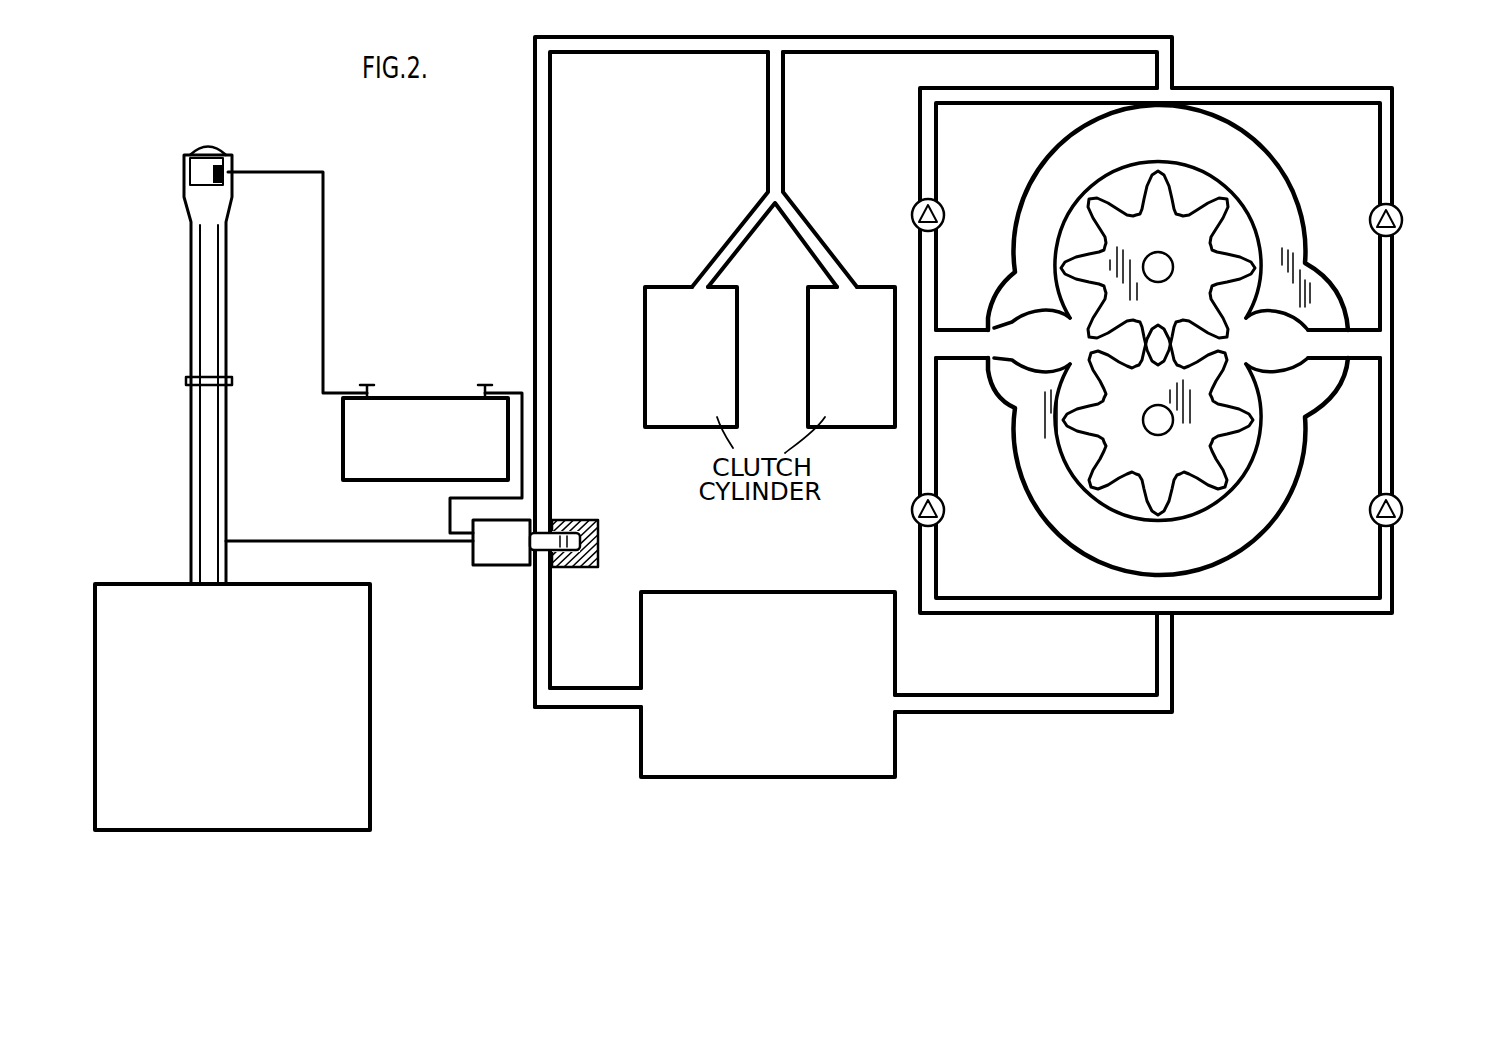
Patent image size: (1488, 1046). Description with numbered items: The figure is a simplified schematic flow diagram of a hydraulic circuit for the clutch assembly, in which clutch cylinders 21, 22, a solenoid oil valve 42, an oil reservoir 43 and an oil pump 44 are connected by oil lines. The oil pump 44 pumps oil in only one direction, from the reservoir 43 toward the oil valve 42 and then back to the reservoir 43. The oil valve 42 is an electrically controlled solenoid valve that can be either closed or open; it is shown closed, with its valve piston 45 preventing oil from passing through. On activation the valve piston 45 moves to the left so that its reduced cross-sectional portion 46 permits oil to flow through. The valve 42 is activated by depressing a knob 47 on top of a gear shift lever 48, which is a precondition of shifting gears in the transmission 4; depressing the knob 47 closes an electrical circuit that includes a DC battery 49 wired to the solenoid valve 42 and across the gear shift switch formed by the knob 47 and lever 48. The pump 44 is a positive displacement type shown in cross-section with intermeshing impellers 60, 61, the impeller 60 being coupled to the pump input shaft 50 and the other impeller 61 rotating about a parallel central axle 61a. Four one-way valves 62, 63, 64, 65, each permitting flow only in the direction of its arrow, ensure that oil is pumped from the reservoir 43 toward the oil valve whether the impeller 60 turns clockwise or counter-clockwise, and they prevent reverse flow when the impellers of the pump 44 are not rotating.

The transmission 4 is at (346, 673).
The clutch cylinder 21 is at (648, 347).
The clutch cylinder 22 is at (830, 348).
The solenoid oil valve 42 is at (509, 568).
The oil reservoir 43 is at (893, 664).
The oil pump 44 is at (1044, 519).
The valve piston 45 is at (557, 532).
The reduced cross-sectional portion 46 is at (590, 520).
The knob 47 is at (217, 154).
The gear shift lever 48 is at (226, 455).
The DC battery 49 is at (400, 470).
The pump input shaft 50 is at (1172, 263).
The impeller 60 is at (1223, 203).
The impeller 61 is at (1247, 453).
The central axle 61a is at (1163, 427).
The one-way valve 62 is at (910, 506).
The one-way valve 63 is at (1400, 503).
The one-way valve 64 is at (935, 205).
The one-way valve 65 is at (1395, 208).